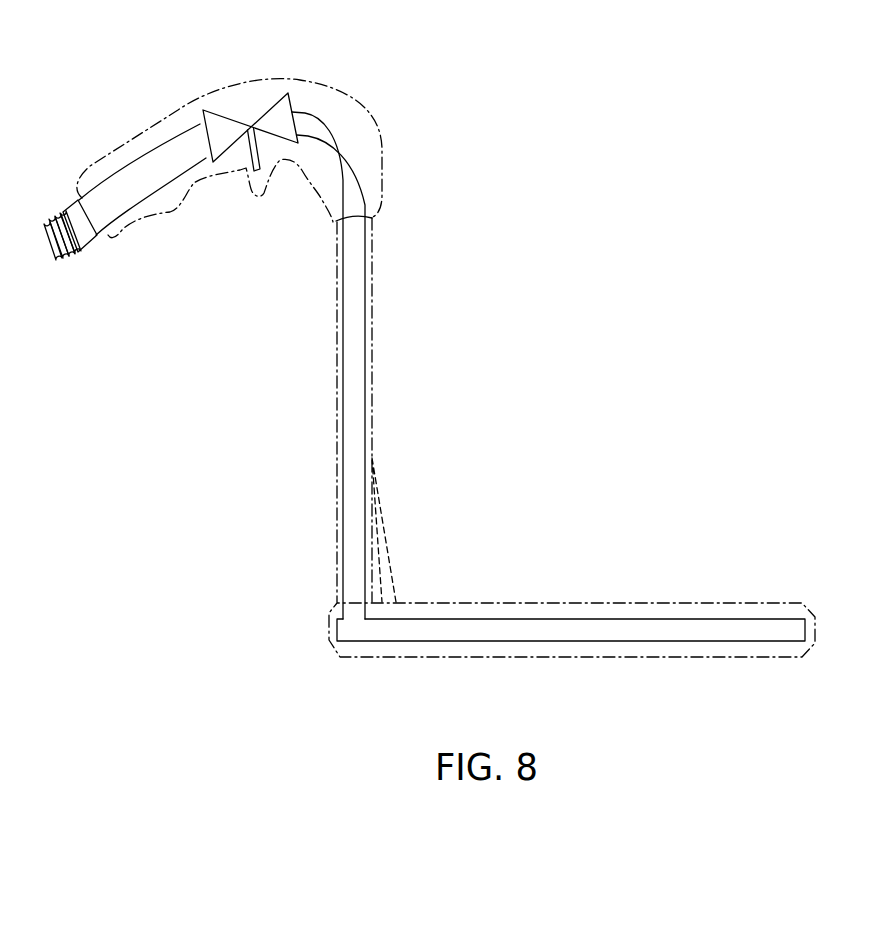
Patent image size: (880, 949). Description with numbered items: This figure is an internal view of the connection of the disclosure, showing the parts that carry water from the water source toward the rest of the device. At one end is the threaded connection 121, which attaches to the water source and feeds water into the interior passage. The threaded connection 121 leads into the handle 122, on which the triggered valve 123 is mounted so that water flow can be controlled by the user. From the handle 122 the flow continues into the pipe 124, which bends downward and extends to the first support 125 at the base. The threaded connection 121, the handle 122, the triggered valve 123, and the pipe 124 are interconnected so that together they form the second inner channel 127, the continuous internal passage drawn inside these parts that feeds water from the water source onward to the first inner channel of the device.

The threaded connection 121 is at (82, 253).
The handle 122 is at (172, 112).
The triggered valve 123 is at (277, 120).
The pipe 124 is at (370, 377).
The first support 125 is at (386, 563).
The second inner channel 127 is at (352, 287).